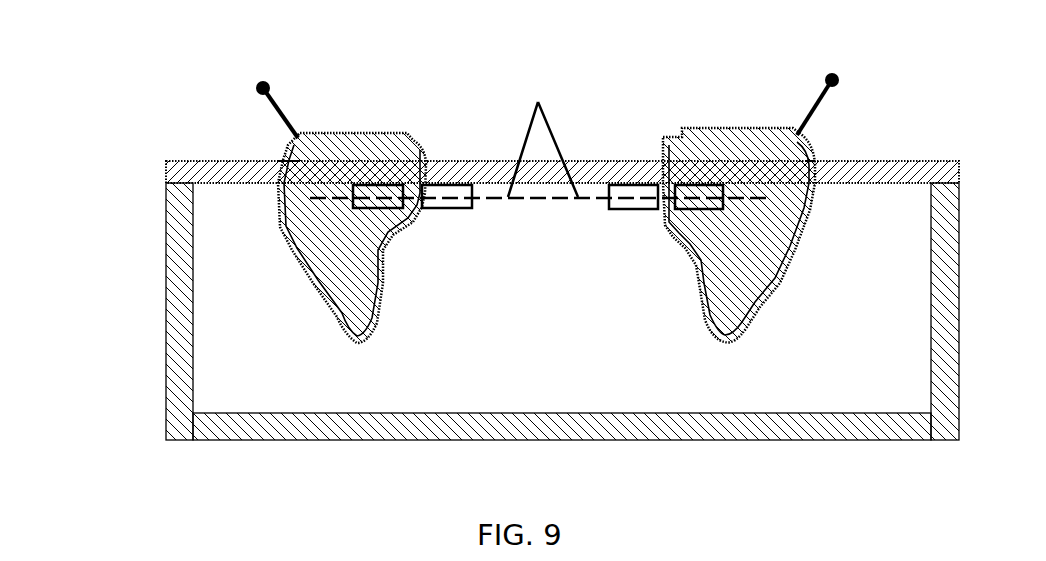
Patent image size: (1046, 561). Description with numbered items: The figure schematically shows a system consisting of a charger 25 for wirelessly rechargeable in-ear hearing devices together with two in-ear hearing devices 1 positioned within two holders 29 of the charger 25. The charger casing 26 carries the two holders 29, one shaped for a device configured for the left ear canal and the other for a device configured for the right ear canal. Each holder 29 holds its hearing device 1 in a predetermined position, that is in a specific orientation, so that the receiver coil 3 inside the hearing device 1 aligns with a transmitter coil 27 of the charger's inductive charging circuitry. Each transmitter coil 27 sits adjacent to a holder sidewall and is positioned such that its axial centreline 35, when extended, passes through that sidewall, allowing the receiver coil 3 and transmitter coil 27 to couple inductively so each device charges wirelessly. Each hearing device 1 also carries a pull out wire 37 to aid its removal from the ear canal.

The in-ear hearing device 1 is at (365, 117).
The receiver coil 3 is at (380, 184).
The charger 25 is at (266, 446).
The charger casing 26 is at (166, 320).
The transmitter coil 27 is at (638, 211).
The holder 29 is at (280, 155).
The axial centreline 35 is at (538, 102).
The pull out wire 37 is at (265, 81).